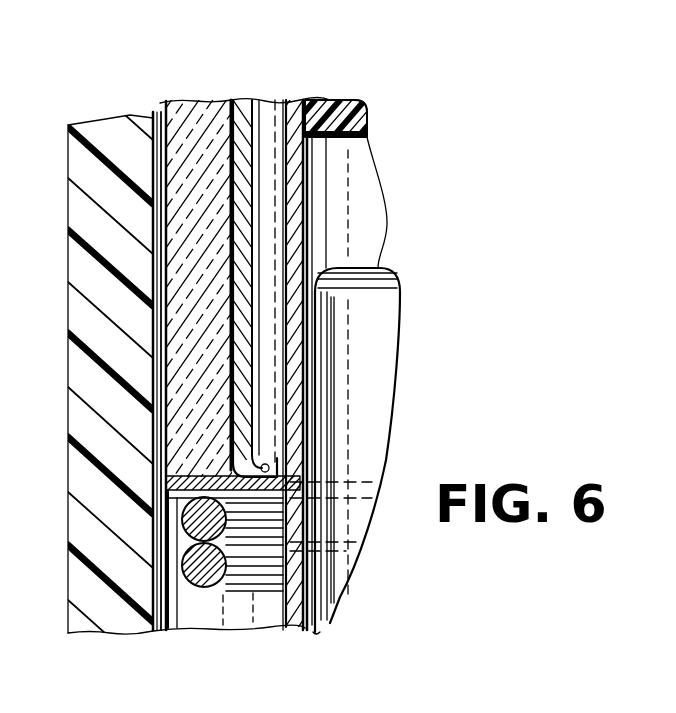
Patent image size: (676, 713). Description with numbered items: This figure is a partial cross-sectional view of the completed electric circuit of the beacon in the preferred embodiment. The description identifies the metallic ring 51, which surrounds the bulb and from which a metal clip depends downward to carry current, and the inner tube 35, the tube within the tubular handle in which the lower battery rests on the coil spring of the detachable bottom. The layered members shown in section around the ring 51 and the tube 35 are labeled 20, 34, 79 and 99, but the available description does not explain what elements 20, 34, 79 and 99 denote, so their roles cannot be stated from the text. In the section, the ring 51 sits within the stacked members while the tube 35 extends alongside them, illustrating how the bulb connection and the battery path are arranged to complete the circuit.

The frame member 20 is at (199, 105).
The metallic ring 51 is at (244, 100).
The wall 34 is at (82, 307).
The plate 79 is at (168, 488).
The inner tube 35 is at (293, 378).
The cables 99 is at (207, 572).